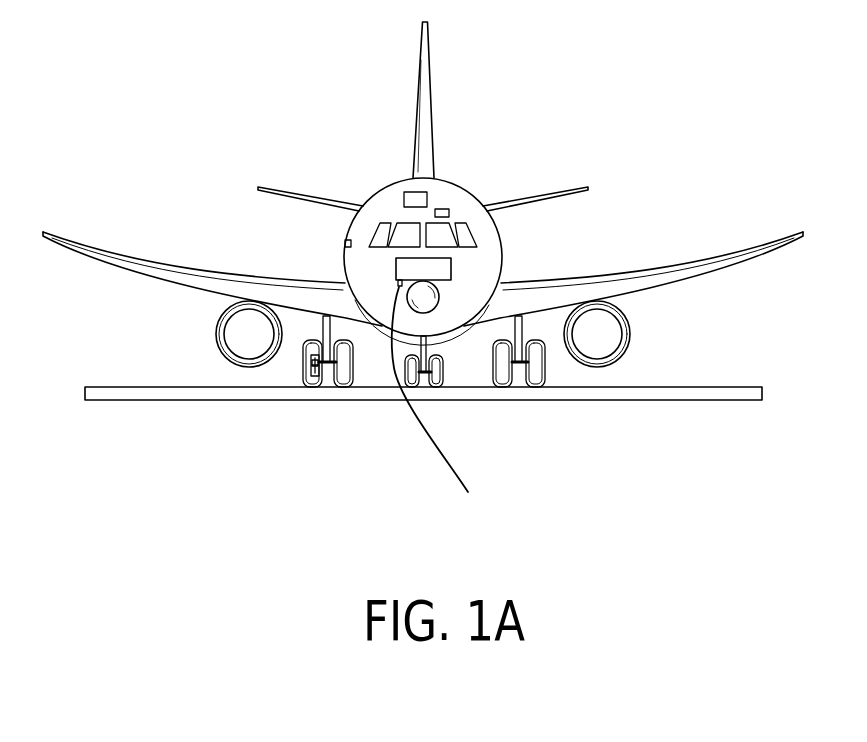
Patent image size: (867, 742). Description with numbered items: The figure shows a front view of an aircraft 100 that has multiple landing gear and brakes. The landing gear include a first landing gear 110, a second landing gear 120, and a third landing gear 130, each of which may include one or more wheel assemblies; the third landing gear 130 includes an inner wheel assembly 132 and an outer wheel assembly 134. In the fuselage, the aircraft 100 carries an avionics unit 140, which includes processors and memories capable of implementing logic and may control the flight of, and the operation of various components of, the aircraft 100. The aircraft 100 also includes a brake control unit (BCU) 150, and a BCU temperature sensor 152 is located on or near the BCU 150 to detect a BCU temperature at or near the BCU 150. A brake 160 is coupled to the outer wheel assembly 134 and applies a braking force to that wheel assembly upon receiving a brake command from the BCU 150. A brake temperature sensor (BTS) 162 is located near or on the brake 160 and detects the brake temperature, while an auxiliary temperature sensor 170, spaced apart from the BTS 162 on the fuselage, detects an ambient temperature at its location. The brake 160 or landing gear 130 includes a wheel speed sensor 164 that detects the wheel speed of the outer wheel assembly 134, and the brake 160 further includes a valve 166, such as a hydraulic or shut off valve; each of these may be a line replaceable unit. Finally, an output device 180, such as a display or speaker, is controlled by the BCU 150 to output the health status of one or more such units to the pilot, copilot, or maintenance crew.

The aircraft 100 is at (286, 98).
The first landing gear 110 is at (545, 375).
The second landing gear 120 is at (443, 373).
The third landing gear 130 is at (288, 374).
The inner wheel assembly 132 is at (338, 380).
The outer wheel assembly 134 is at (312, 378).
The avionics unit 140 is at (428, 196).
The brake control unit (BCU) 150 is at (451, 270).
The BCU temperature sensor 152 is at (448, 392).
The brake 160 is at (317, 378).
The brake temperature sensor (BTS) 162 is at (325, 379).
The wheel speed sensor 164 is at (333, 379).
The valve 166 is at (311, 363).
The auxiliary temperature sensor 170 is at (346, 244).
The output device 180 is at (449, 213).